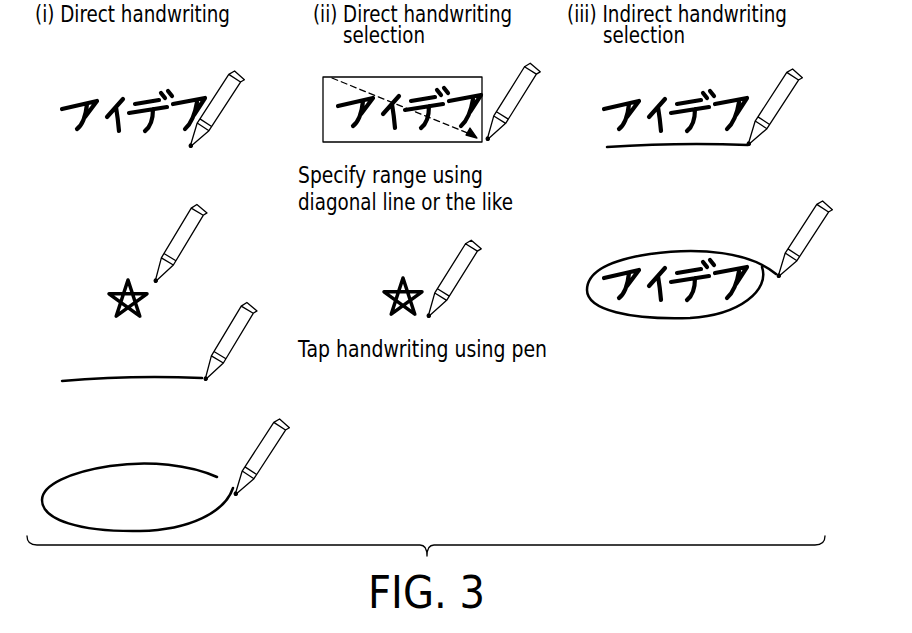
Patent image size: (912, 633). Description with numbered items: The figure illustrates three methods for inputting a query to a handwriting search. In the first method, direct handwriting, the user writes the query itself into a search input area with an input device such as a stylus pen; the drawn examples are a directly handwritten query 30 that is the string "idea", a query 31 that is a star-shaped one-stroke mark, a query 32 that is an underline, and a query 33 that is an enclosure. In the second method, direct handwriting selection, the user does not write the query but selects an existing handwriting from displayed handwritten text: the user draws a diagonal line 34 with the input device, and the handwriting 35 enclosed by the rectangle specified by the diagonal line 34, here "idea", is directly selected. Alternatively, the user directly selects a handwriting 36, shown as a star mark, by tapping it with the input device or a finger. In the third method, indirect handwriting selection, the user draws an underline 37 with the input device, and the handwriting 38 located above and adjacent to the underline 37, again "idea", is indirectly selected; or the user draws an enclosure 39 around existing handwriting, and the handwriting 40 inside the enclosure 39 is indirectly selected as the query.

The example of a directly handwritten query 30 is at (78, 96).
The example of the query 31 is at (108, 295).
The example of the query 32 is at (85, 380).
The example of the query 33 is at (75, 473).
The diagonal line 34 is at (323, 97).
The handwriting 35 is at (337, 106).
The handwriting 36 is at (385, 295).
The underline 37 is at (672, 148).
The handwriting 38 is at (615, 106).
The enclosure 39 is at (615, 258).
The handwriting 40 is at (728, 265).